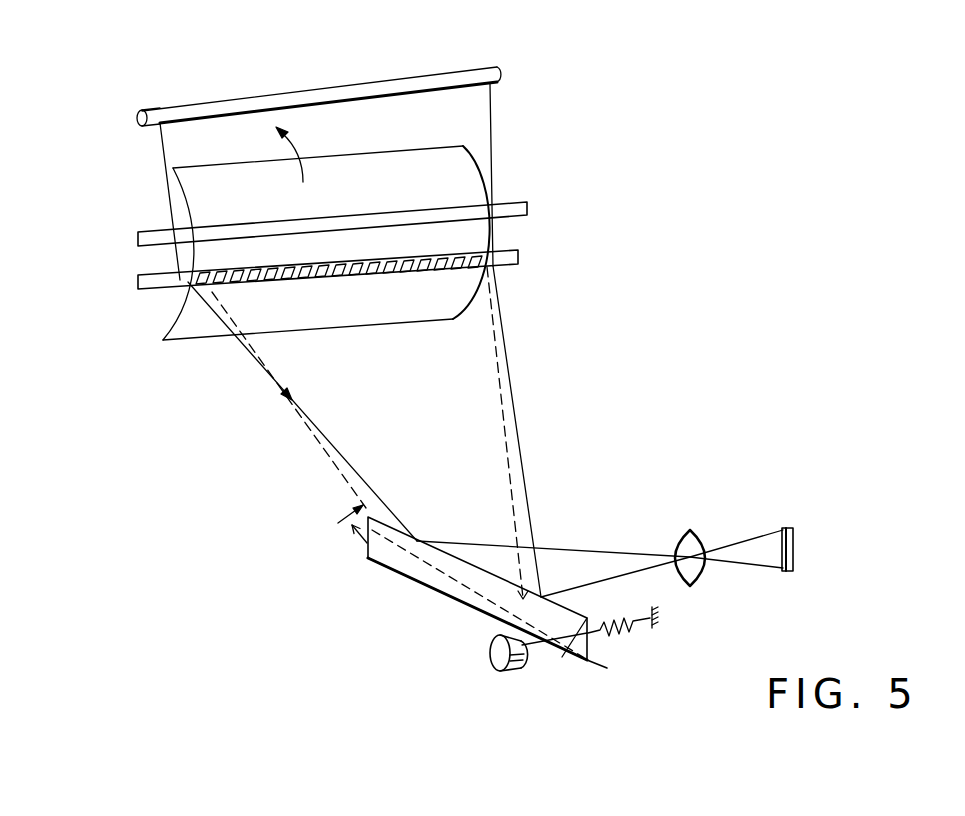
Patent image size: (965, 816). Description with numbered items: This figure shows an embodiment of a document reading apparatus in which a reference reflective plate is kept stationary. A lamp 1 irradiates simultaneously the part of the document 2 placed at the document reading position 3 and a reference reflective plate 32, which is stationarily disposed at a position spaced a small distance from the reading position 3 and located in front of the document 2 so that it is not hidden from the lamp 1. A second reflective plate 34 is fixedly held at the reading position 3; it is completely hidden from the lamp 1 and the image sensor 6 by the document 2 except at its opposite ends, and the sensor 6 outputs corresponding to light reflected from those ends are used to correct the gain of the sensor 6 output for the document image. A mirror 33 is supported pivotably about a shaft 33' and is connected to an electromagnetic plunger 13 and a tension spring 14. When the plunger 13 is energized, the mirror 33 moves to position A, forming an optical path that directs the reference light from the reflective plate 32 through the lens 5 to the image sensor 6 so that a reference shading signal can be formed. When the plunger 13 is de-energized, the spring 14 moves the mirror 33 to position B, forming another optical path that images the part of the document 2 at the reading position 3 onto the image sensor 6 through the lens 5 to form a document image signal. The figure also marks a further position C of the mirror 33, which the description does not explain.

The lamp 1 is at (253, 97).
The document 2 is at (428, 158).
The document reading position 3 is at (414, 272).
The reference reflective plate 32 is at (517, 202).
The reflective plate 34 is at (519, 252).
The mirror 33 is at (514, 595).
The shaft 33' is at (582, 695).
The electromagnetic plunger 13 is at (507, 670).
The tension spring 14 is at (620, 617).
The lens 5 is at (690, 540).
The image sensor 6 is at (797, 530).
The position A is at (362, 551).
The position B is at (393, 530).
The mirror position C is at (344, 504).